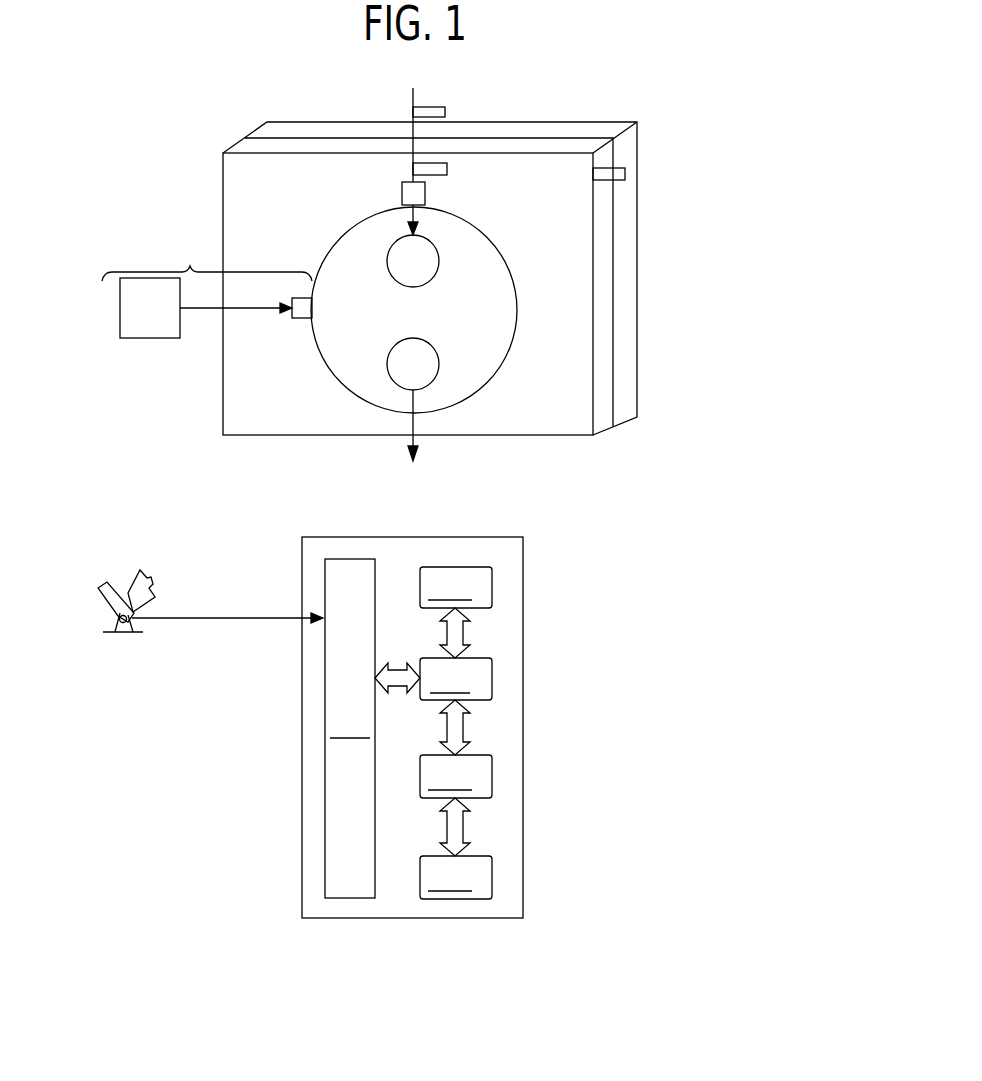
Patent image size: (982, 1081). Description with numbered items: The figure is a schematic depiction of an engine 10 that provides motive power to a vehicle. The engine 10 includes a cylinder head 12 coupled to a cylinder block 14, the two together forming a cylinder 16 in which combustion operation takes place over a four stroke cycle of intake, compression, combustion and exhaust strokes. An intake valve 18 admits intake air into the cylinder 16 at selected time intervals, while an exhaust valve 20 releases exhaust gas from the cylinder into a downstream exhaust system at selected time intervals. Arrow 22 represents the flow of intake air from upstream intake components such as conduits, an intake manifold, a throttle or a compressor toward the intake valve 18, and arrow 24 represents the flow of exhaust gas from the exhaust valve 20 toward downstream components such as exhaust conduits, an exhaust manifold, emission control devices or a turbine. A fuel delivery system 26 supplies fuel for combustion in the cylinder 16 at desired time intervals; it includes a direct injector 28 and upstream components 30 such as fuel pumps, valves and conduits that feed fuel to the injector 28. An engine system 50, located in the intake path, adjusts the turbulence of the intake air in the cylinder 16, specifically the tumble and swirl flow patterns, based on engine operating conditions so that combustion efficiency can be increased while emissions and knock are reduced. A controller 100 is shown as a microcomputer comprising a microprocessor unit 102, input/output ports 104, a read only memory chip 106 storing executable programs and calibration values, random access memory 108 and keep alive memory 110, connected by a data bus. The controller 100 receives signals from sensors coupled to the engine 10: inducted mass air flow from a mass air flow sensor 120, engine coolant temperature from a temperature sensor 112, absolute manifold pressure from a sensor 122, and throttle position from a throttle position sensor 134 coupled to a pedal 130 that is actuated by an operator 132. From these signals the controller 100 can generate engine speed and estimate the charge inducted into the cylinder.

The engine 10 is at (868, 142).
The cylinder head 12 is at (602, 267).
The cylinder block 14 is at (621, 242).
The cylinder 16 is at (425, 326).
The intake valve 18 is at (438, 264).
The exhaust valve 20 is at (437, 372).
The arrow 22 is at (413, 99).
The arrow 24 is at (414, 440).
The fuel delivery system 26 is at (193, 262).
The direct injector 28 is at (302, 318).
The upstream components 30 is at (165, 338).
The engine system 50 is at (388, 193).
The controller 100 is at (512, 537).
The microprocessor unit 102 is at (492, 673).
The input/output ports 104 is at (377, 563).
The read only memory chip 106 is at (492, 583).
The random access memory 108 is at (492, 775).
The keep alive memory 110 is at (492, 875).
The temperature sensor 112 is at (625, 174).
The mass air flow sensor 120 is at (445, 112).
The sensor 122 is at (447, 169).
The pedal 130 is at (105, 598).
The operator 132 is at (152, 583).
The throttle position sensor 134 is at (134, 627).